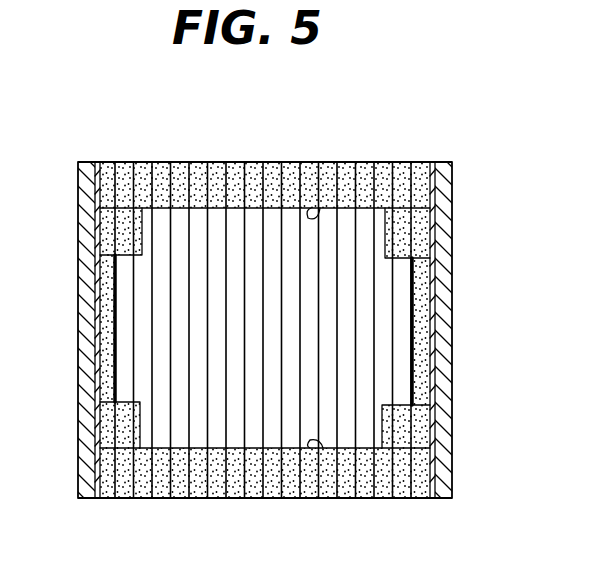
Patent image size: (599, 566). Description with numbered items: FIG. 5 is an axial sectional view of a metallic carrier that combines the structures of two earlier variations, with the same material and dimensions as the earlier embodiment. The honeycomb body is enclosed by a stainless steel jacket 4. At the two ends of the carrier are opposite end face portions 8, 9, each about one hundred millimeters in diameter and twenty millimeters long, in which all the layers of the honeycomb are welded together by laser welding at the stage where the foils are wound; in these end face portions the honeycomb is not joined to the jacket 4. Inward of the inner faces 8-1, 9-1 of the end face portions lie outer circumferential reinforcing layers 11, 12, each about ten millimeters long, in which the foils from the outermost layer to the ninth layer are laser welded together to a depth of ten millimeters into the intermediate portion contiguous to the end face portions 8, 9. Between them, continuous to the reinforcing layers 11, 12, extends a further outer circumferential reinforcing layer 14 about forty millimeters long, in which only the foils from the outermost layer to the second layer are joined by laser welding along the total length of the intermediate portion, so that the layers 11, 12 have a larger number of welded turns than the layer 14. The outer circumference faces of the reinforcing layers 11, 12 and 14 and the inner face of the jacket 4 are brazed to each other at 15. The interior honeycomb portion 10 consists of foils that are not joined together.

The stainless steel jacket 4 is at (78, 181).
The end face portion 8 is at (293, 175).
The inner face of end face portion 8-1 is at (320, 208).
The end face portion 9 is at (281, 494).
The inner face of end face portion 9-1 is at (323, 448).
The honeycomb portion 10 is at (243, 250).
The outer circumferential reinforcing layer 11 is at (119, 212).
The outer circumferential reinforcing layer 12 is at (410, 428).
The outer circumferential reinforcing layer 14 is at (414, 344).
The brazed joint 15 is at (443, 305).